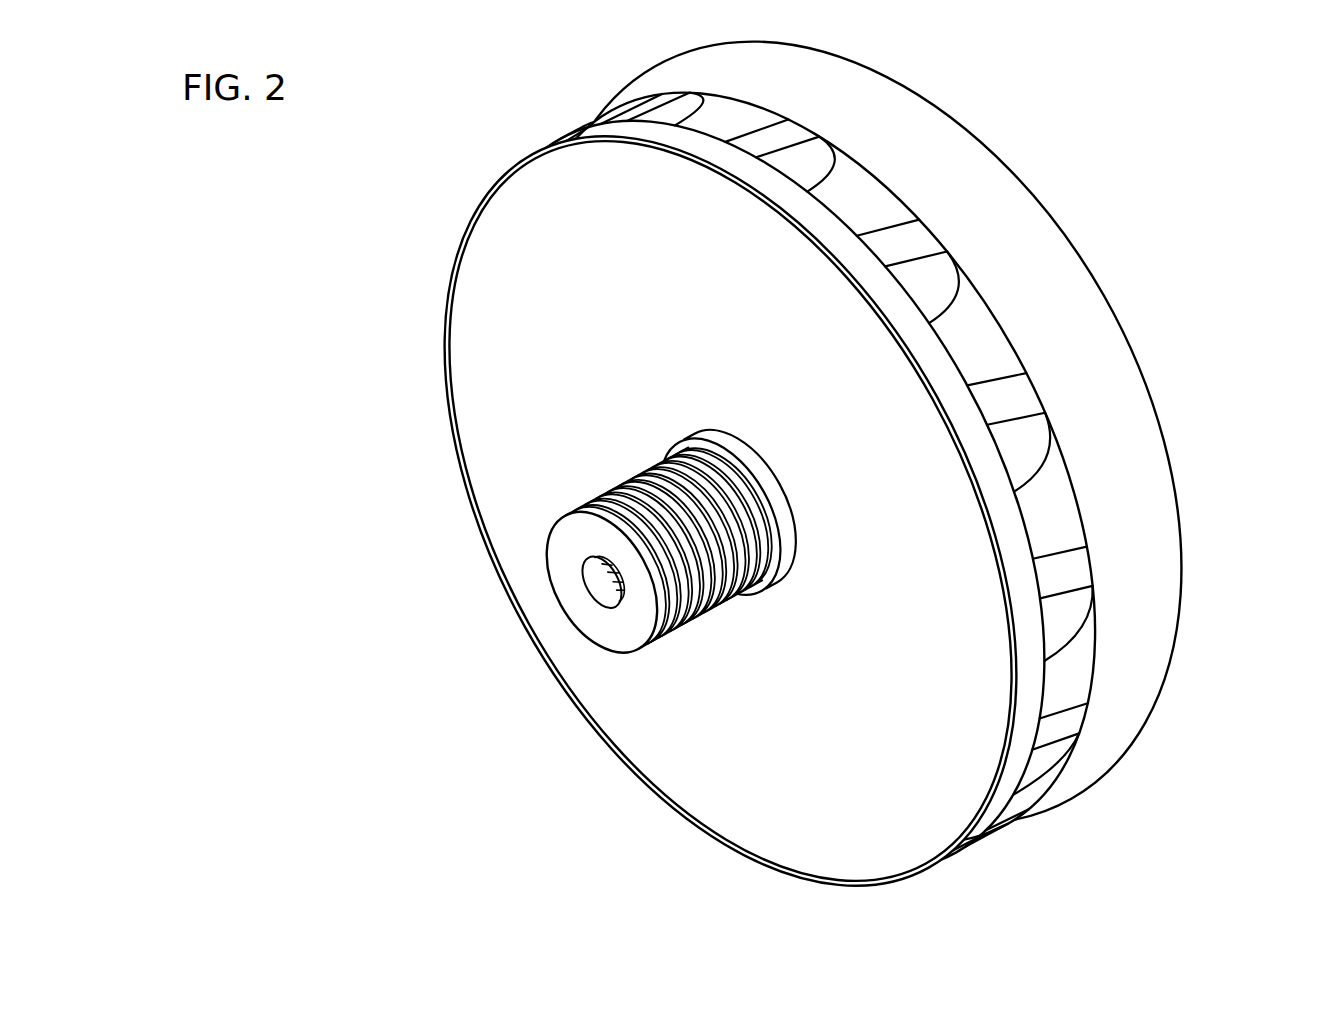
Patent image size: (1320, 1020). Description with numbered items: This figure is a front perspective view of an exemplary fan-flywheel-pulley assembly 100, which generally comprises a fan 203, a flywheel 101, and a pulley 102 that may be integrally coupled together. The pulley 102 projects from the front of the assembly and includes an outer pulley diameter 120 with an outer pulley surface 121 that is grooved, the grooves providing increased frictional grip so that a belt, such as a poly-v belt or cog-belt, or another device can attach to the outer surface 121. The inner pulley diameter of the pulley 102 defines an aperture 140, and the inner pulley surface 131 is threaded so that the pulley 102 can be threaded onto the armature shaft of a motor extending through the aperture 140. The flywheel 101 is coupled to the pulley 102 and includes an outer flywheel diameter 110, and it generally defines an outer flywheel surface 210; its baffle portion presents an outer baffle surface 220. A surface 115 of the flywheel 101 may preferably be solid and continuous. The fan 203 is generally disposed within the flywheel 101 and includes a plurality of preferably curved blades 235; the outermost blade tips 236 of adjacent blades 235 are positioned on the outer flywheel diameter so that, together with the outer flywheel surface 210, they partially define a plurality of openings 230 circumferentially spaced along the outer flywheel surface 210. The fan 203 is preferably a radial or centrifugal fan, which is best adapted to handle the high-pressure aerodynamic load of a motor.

The fan-flywheel-pulley assembly 100 is at (1187, 173).
The flywheel 101 is at (755, 798).
The pulley 102 is at (707, 640).
The outer flywheel diameter 110 is at (447, 341).
The surface 115 is at (477, 400).
The outer pulley diameter 120 is at (560, 525).
The outer pulley surface 121 is at (608, 475).
The inner pulley surface 131 is at (602, 622).
The aperture 140 is at (600, 588).
The fan 203 is at (1063, 497).
The outer flywheel surface 210 is at (613, 137).
The outer baffle surface 220 is at (1070, 300).
The openings 230 is at (953, 362).
The blades 235 is at (797, 165).
The outermost blade tips 236 is at (742, 140).